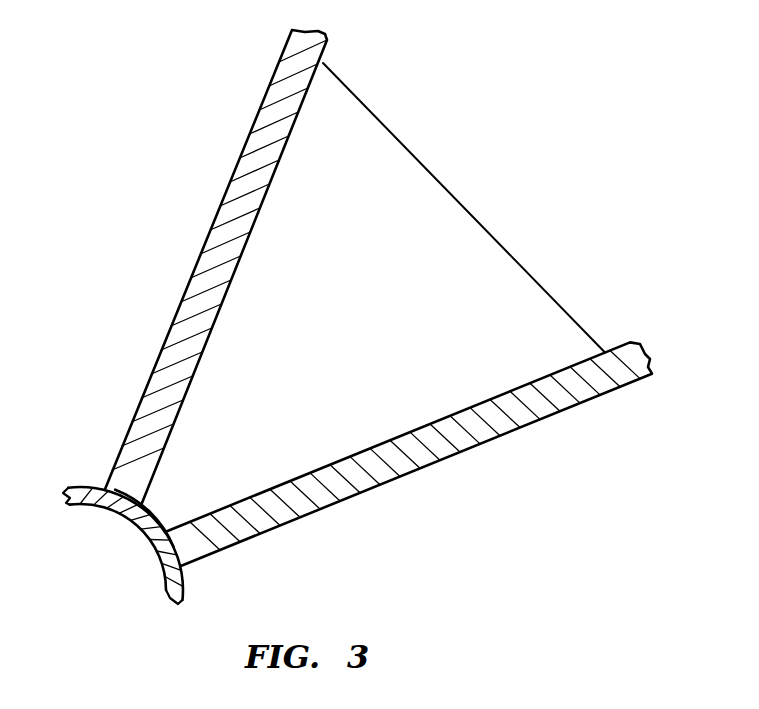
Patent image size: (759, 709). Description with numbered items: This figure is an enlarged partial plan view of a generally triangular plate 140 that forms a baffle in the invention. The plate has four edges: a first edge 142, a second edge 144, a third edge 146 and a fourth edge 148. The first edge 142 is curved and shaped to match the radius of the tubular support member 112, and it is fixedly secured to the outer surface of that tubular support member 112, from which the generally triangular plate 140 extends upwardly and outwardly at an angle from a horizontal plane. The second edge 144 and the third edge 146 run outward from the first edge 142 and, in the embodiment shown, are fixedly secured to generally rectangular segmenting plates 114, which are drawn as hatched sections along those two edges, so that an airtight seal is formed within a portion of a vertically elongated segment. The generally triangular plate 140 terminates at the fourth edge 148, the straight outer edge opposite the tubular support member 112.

The tubular support member 112 is at (185, 593).
The generally rectangular segmenting plates 114 is at (172, 320).
The generally triangular plate 140 is at (464, 208).
The first edge 142 is at (150, 532).
The second edge 144 is at (398, 437).
The third edge 146 is at (214, 322).
The fourth edge 148 is at (443, 184).